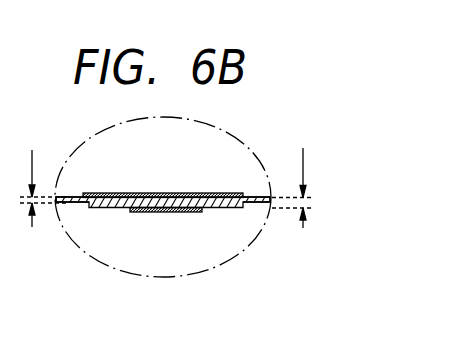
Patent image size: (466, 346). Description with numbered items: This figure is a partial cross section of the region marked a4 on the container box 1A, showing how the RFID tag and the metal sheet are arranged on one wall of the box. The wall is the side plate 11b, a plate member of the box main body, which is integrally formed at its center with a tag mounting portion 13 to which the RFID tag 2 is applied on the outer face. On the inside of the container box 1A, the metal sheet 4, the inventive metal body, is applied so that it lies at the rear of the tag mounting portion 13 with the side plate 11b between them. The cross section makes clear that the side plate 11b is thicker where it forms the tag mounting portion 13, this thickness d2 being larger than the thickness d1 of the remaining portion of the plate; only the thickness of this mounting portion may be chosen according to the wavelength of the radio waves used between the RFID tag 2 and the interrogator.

The metal sheet 4 is at (173, 192).
The tag mounting portion 13 is at (116, 208).
The RFID tag 2 is at (177, 212).
The side plate 11b is at (75, 203).
The container box 1A is at (256, 217).
The portion shown by reference a4 is at (208, 272).
The thickness d1 is at (35, 188).
The thickness d2 is at (301, 188).